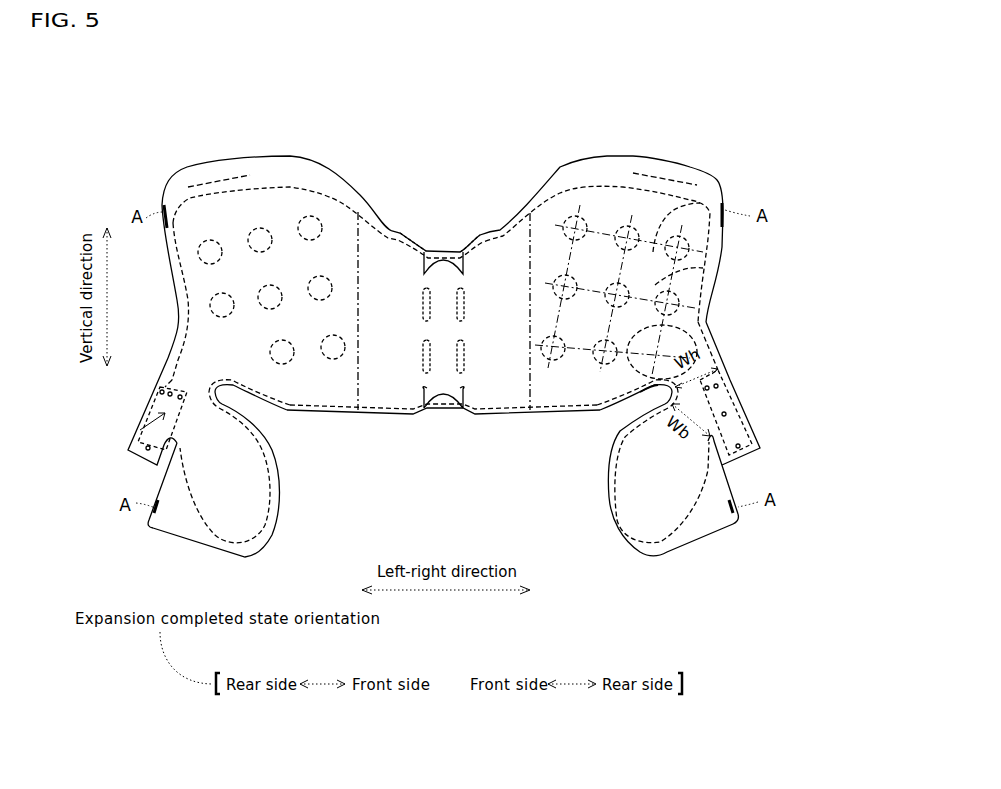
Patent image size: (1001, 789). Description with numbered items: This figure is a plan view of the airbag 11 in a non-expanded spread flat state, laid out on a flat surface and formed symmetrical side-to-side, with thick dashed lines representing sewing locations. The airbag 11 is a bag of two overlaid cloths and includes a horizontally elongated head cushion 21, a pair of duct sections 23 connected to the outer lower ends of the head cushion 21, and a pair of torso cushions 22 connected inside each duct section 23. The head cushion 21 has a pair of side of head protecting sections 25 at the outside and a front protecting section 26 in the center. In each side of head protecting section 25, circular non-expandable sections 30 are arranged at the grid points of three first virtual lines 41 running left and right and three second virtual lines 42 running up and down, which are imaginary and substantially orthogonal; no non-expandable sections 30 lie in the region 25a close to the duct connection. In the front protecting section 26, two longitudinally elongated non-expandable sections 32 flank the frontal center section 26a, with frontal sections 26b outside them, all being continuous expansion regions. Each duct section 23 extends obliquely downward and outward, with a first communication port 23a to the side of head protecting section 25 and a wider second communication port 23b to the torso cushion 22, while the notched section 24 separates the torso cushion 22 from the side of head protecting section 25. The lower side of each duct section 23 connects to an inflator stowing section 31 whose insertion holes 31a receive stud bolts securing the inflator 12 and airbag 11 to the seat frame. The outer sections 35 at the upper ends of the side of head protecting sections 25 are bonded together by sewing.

The airbag 11 is at (455, 131).
The inflator 12 is at (158, 404).
The head cushion 21 is at (290, 195).
The torso cushions 22 is at (258, 513).
The duct sections 23 is at (728, 372).
The first communication port 23a is at (180, 377).
The second communication port 23b is at (212, 465).
The notched section 24 is at (632, 407).
The side of head protecting sections 25 is at (323, 395).
The region close to the connecting section with the duct sections 25a is at (700, 340).
The front protecting section 26 is at (446, 392).
The frontal center section 26a is at (441, 275).
The frontal sections 26b is at (395, 250).
The non-expandable sections 30 is at (690, 248).
The inflator stowing section 31 is at (758, 437).
The insertion holes 31a is at (158, 458).
The non-expandable sections 32 is at (420, 358).
The two-dot chain line section 35 is at (217, 183).
The first virtual lines 41 is at (718, 200).
The second virtual lines 42 is at (690, 273).